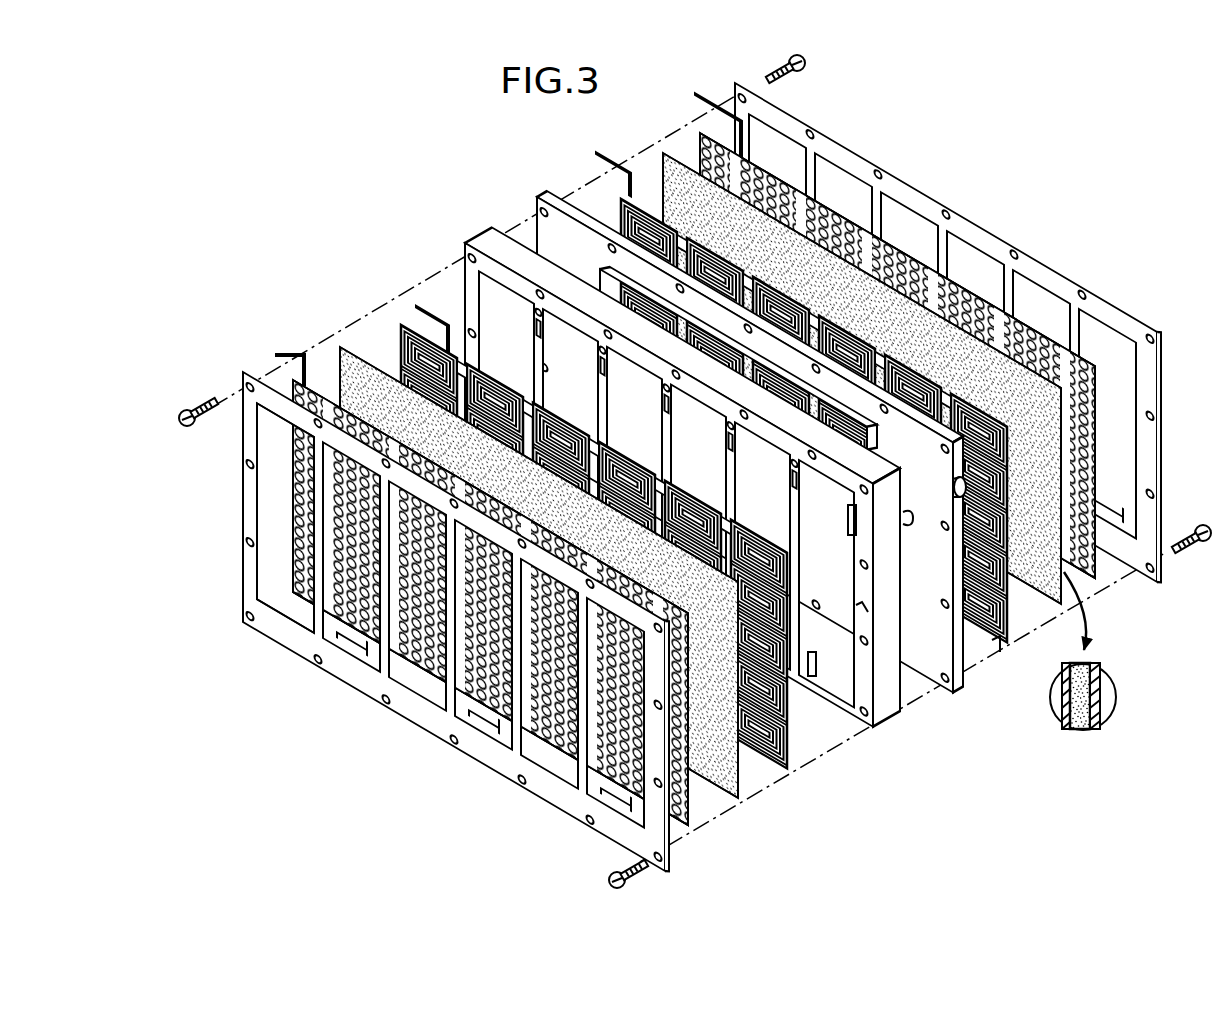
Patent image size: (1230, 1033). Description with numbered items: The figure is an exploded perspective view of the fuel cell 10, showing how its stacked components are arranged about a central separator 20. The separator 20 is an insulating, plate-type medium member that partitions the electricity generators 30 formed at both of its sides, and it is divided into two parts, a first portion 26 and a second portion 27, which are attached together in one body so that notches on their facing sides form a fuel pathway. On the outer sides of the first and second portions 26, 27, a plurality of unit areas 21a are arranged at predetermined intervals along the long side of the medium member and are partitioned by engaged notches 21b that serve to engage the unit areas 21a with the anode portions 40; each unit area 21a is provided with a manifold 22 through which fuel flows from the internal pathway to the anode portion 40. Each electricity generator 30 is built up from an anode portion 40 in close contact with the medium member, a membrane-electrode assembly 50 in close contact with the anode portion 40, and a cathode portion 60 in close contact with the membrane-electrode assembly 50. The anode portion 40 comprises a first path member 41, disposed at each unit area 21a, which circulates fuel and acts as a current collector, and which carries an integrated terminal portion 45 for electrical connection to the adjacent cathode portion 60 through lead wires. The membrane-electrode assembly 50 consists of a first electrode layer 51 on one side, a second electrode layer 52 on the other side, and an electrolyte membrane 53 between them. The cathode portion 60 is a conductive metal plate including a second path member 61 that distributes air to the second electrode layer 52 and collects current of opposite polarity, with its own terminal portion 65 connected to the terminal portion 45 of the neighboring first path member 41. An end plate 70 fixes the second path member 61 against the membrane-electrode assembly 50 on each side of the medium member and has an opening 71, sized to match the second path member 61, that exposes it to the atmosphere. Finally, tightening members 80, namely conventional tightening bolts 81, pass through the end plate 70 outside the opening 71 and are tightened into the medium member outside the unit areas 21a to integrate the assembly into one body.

The fuel cell 10 is at (322, 167).
The separator 20 is at (480, 126).
The unit area 21a is at (860, 617).
The engaged notch 21b is at (855, 515).
The manifold 22 is at (818, 672).
The first portion 26 is at (470, 243).
The second portion 27 is at (545, 205).
The electricity generator 30 is at (835, 824).
The anode portion 40 is at (775, 775).
The first path member 41 is at (495, 488).
The terminal portion 45 is at (561, 527).
The membrane-electrode assembly 50 is at (735, 795).
The first electrode layer 51 is at (1064, 708).
The second electrode layer 52 is at (1100, 702).
The electrolyte membrane 53 is at (1082, 730).
The cathode portion 60 is at (700, 817).
The second path member 61 is at (333, 385).
The terminal portion 65 is at (285, 345).
The end plate 70 is at (330, 684).
The opening 71 is at (268, 625).
The tightening member 80 is at (185, 393).
The tightening bolt 81 is at (197, 426).